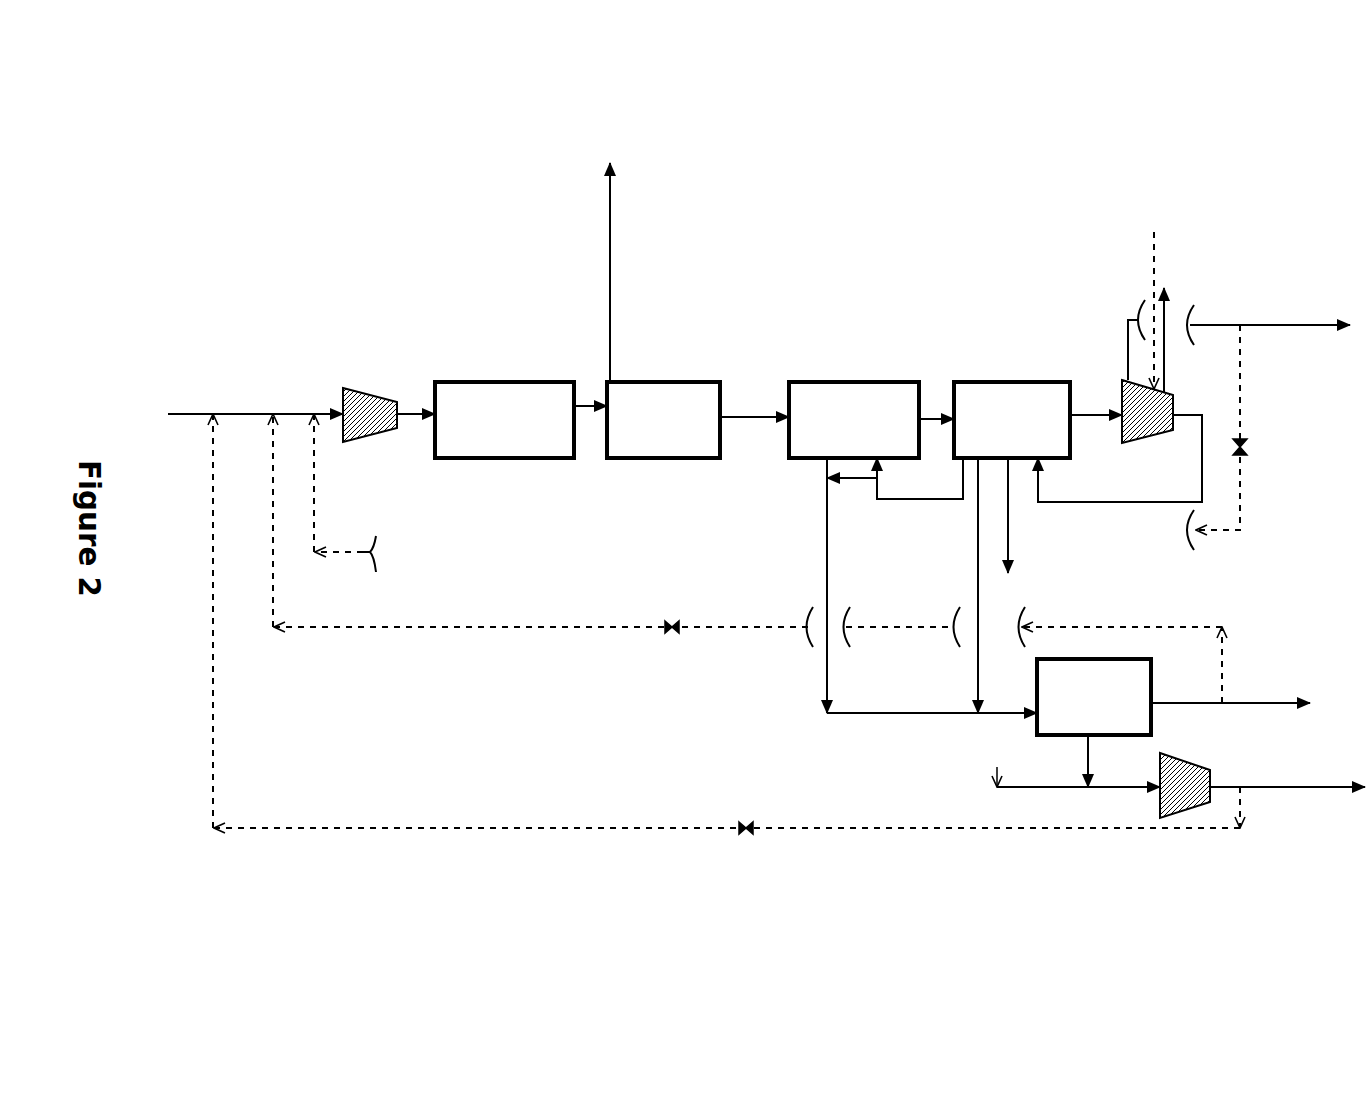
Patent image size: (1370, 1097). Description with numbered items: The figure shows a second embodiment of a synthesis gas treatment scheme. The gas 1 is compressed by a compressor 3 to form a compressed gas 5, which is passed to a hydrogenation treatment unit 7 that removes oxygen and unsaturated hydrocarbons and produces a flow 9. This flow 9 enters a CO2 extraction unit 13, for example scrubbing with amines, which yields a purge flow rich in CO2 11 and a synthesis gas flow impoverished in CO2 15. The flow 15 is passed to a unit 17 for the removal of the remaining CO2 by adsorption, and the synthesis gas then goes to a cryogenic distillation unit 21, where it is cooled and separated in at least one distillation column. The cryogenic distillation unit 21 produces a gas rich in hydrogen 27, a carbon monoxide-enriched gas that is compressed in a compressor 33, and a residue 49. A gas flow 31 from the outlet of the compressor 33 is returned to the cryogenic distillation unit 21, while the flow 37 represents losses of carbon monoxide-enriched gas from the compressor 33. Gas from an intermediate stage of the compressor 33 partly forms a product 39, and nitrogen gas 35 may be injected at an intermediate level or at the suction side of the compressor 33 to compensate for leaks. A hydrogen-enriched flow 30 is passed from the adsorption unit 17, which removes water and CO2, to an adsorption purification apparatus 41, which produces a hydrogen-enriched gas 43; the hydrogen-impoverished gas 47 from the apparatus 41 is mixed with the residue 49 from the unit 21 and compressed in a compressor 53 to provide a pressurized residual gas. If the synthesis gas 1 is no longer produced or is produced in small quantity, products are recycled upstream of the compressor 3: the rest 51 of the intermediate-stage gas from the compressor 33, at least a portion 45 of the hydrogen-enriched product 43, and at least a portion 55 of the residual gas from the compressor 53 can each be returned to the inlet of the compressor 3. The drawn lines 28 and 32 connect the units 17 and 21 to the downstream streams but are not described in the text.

The gas 1 is at (206, 412).
The compressor 3 is at (367, 386).
The compressed gas 5 is at (398, 428).
The hydrogenation treatment unit 7 is at (504, 420).
The flow 9 is at (582, 412).
The purge flow rich in CO2 11 is at (607, 216).
The CO2 extraction unit 13 is at (663, 420).
The synthesis gas flow impoverished in CO2 15 is at (750, 425).
The unit for the removal of CO2 by adsorption 17 is at (871, 420).
The cryogenic distillation unit 21 is at (1038, 420).
The gas rich in hydrogen 27 is at (900, 500).
The branch stream 28 is at (842, 483).
The hydrogen-enriched flow 30 is at (830, 535).
The gas flow 31 is at (1125, 505).
The second liquid stream 32 is at (976, 598).
The compressor 33 is at (1148, 437).
The nitrogen gas 35 is at (1150, 256).
The flow 37 is at (1166, 394).
The product 39 is at (1305, 326).
The adsorption purification apparatus 41 is at (1094, 697).
The hydrogen-enriched gas 43 is at (1286, 699).
The portion of the hydrogen-enriched product 45 is at (1150, 626).
The hydrogen-impoverished gas 47 is at (1092, 751).
The residue 49 is at (1010, 520).
The rest of the gas from the intermediate stage of the compressor 51 is at (1252, 497).
The compressor 53 is at (1204, 764).
The portion of the residual gas 55 is at (896, 827).